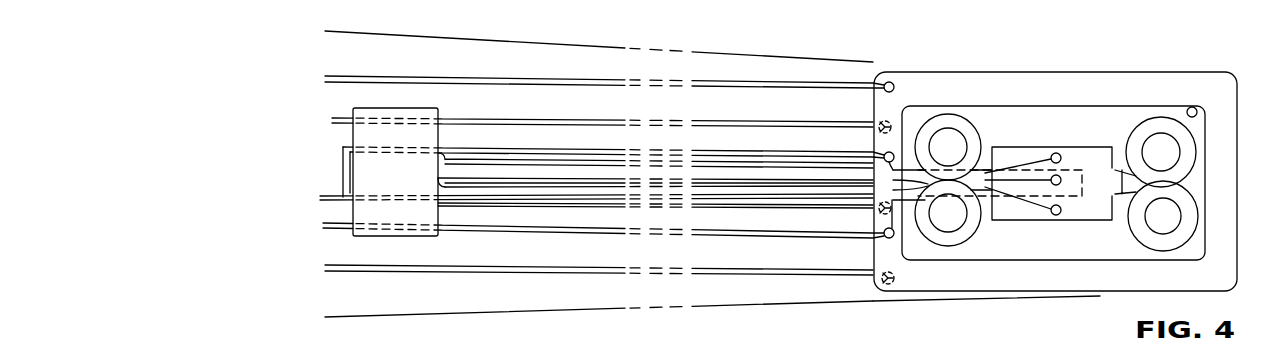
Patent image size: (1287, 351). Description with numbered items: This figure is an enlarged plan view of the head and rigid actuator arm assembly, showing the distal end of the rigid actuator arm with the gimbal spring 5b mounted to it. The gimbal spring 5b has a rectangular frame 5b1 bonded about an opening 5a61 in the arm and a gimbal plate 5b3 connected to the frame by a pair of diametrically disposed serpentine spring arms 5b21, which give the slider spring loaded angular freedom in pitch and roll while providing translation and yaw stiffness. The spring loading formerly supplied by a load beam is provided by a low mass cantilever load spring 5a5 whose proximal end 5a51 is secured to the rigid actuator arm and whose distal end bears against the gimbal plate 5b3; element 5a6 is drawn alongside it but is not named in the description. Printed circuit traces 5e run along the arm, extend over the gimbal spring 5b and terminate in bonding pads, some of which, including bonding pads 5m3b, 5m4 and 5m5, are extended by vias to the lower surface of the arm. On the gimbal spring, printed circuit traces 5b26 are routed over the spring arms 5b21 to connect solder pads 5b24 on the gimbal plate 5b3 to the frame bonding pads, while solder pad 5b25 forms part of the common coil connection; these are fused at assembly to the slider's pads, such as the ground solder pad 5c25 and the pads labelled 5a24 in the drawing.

The proximal end 5a51 is at (372, 131).
The printed circuit traces 5e is at (588, 147).
The cantilever load spring 5a5 is at (505, 178).
The lead wire 5a6 is at (604, 195).
The gimbal spring 5b is at (1056, 80).
The rectangular frame 5b1 is at (1102, 80).
The serpentine spring arms 5b21 is at (949, 120).
The solder pads 5b24 is at (1053, 154).
The solder pad 5b25 is at (1082, 172).
The printed circuit traces 5b26 is at (1020, 168).
The gimbal plate 5b3 is at (1100, 221).
The bonding pad 5m5 is at (879, 123).
The bonding pad 5m3b is at (879, 212).
The bonding pad 5m4 is at (897, 291).
The opening 5a61 is at (1197, 107).
The terminal 5a24 is at (508, 346).
The solder pad 5c25 is at (676, 346).